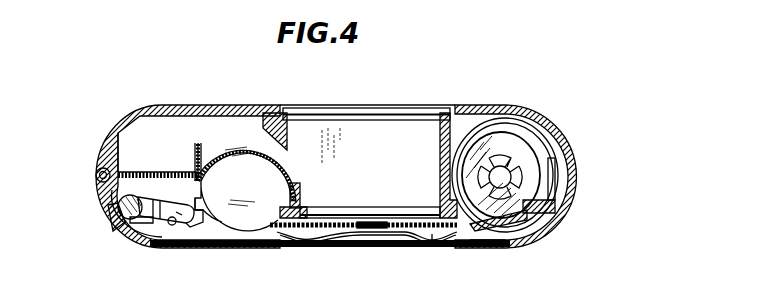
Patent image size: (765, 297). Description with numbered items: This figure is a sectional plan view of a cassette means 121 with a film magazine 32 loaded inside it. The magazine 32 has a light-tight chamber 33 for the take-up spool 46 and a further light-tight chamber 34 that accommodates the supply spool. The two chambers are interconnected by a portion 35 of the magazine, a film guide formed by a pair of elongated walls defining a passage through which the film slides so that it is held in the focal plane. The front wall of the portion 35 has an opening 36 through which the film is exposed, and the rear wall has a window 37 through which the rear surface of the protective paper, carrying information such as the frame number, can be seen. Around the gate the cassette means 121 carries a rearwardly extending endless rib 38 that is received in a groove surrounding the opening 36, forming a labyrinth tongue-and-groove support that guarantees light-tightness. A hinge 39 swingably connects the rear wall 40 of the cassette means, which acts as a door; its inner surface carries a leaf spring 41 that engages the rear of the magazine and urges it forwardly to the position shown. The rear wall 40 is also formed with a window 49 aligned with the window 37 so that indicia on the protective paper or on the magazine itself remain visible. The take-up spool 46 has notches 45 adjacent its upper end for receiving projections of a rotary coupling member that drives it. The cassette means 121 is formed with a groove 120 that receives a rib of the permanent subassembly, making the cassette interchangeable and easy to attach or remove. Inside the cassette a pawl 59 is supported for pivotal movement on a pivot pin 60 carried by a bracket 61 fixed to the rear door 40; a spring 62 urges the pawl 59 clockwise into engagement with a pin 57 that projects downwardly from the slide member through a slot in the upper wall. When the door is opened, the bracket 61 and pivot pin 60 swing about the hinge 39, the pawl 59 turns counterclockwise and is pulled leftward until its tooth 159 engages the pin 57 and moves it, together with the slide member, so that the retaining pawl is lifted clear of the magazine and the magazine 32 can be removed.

The cassette means 121 is at (499, 107).
The groove 120 is at (395, 114).
The hinge 39 is at (96, 174).
The light-tight chamber 34 is at (238, 143).
The film magazine 32 is at (284, 212).
The opening 36 is at (345, 210).
The rib 38 is at (440, 202).
The portion of the magazine 35 is at (322, 240).
The window 37 is at (378, 230).
The window 49 is at (350, 235).
The leaf spring 41 is at (432, 241).
The rear wall 40 is at (487, 246).
The light-tight chamber 33 is at (550, 184).
The notches 45 is at (500, 177).
The take-up spool 46 is at (545, 216).
The spring 62 is at (149, 204).
The tooth 159 is at (208, 246).
The pin 57 is at (170, 225).
The pawl 59 is at (179, 224).
The pivot pin 60 is at (115, 214).
The bracket 61 is at (126, 226).